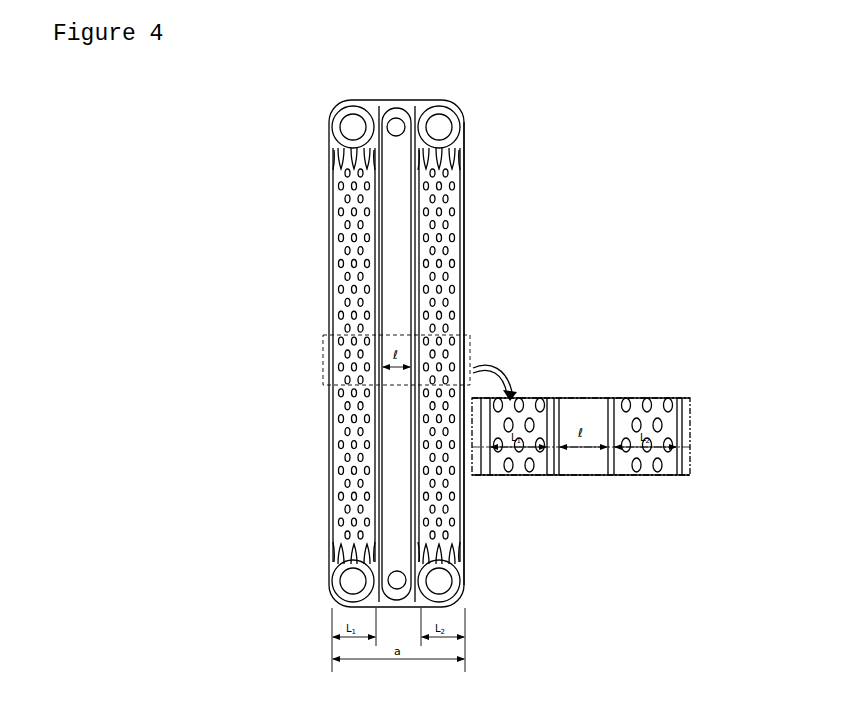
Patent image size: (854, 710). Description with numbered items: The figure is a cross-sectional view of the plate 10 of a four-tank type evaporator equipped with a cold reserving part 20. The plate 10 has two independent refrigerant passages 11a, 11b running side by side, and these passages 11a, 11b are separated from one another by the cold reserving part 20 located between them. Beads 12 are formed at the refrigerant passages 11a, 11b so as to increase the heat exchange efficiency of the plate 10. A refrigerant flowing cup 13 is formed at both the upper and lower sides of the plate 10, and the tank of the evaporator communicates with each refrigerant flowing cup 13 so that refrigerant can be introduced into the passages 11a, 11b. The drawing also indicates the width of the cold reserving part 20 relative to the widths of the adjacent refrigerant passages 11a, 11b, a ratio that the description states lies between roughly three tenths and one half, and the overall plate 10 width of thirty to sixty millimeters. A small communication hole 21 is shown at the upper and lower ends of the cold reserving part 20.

The plate 10 is at (467, 85).
The refrigerant passage 11a is at (336, 202).
The refrigerant passage 11b is at (456, 196).
The beads 12 is at (456, 262).
The refrigerant flowing cup 13 is at (342, 122).
The cold reserving part 20 is at (402, 241).
The communication hole 21 is at (395, 118).